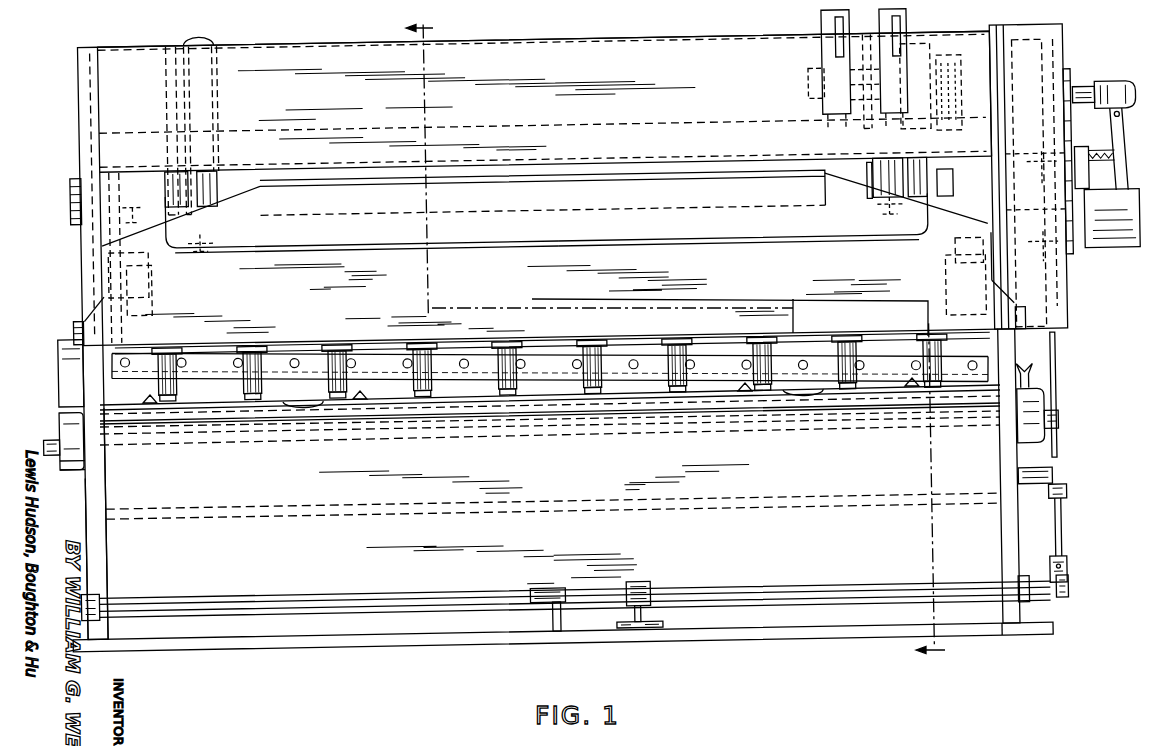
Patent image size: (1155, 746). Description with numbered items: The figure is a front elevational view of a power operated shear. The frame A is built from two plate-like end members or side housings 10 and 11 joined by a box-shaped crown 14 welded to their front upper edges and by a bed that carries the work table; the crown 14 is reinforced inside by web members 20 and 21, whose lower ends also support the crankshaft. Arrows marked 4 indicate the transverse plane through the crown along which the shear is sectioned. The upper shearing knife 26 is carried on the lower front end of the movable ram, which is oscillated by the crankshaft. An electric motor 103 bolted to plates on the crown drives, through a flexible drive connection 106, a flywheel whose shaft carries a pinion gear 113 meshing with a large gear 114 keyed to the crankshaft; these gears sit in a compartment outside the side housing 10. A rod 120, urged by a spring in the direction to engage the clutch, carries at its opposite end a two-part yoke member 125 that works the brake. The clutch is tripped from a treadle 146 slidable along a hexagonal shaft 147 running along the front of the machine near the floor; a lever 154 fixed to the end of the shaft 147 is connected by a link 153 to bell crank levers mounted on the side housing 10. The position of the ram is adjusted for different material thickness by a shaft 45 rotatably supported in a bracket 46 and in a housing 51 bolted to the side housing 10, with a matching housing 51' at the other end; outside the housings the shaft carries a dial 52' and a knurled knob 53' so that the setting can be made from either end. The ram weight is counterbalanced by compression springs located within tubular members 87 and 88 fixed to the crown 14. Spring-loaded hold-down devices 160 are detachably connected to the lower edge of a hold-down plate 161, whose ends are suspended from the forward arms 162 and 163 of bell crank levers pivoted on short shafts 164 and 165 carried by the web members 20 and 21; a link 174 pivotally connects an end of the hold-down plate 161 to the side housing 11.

The side housing 10 is at (1006, 457).
The side housing 11 is at (97, 481).
The crown 14 is at (383, 27).
The section line 4- 4 is at (683, 340).
The web member 20 is at (917, 56).
The web member 21 is at (172, 72).
The shearing knife 26 is at (648, 379).
The shaft 45 is at (1036, 386).
The bracket 46 is at (1029, 348).
The housing 51 is at (1058, 415).
The housing 51' is at (63, 483).
The dial 52' is at (49, 441).
The knurled knob 53' is at (36, 444).
The tubular member 87 is at (878, 169).
The tubular member 88 is at (209, 66).
The electric motor 103 is at (827, 64).
The flexible drive connection 106 is at (941, 120).
The pinion gear 113 is at (1028, 176).
The large gear 114 is at (1072, 38).
The rod 120 is at (1083, 92).
The two-part yoke member 125 is at (1109, 138).
The treadle 146 is at (644, 616).
The hexagonal shaft 147 is at (233, 605).
The link 153 is at (1058, 514).
The lever 154 is at (1060, 574).
The spring-loaded hold-down devices 160 is at (341, 352).
The hold-down plate 161 is at (322, 229).
The forward arm 162 is at (943, 206).
The forward arm 163 is at (148, 214).
The short shaft 164 is at (71, 200).
The short shaft 165 is at (214, 169).
The link 174 is at (72, 328).
The frame A is at (736, 535).